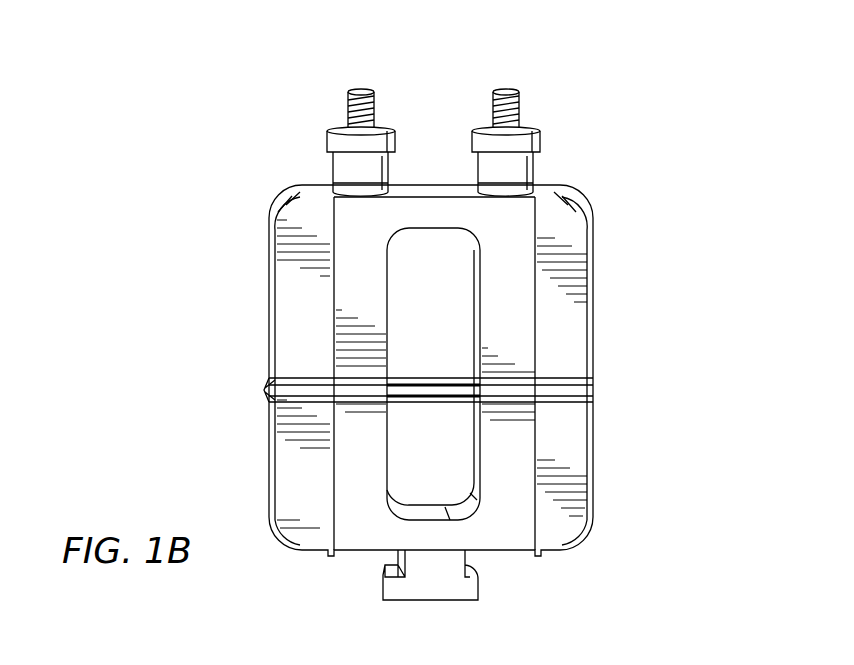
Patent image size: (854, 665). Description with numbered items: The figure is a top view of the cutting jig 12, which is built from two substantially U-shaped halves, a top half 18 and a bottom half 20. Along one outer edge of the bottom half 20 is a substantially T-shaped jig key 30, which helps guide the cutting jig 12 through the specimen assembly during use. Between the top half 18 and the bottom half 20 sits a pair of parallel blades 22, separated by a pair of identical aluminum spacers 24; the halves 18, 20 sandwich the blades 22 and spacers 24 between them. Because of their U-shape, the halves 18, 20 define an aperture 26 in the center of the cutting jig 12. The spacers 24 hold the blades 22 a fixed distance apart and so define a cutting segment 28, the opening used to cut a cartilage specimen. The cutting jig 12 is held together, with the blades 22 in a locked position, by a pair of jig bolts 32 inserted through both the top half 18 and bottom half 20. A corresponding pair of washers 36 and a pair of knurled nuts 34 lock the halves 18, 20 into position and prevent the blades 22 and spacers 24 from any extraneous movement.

The cutting jig 12 is at (652, 58).
The top half 18 is at (578, 336).
The bottom half 20 is at (578, 477).
The pair of parallel blades 22 is at (593, 379).
The aluminum spacers 24 is at (290, 392).
The aperture 26 is at (431, 265).
The cutting segment 28 is at (432, 388).
The jig key 30 is at (463, 593).
The jig bolts 32 is at (353, 98).
The knurled nuts 34 is at (350, 163).
The washers 36 is at (347, 188).